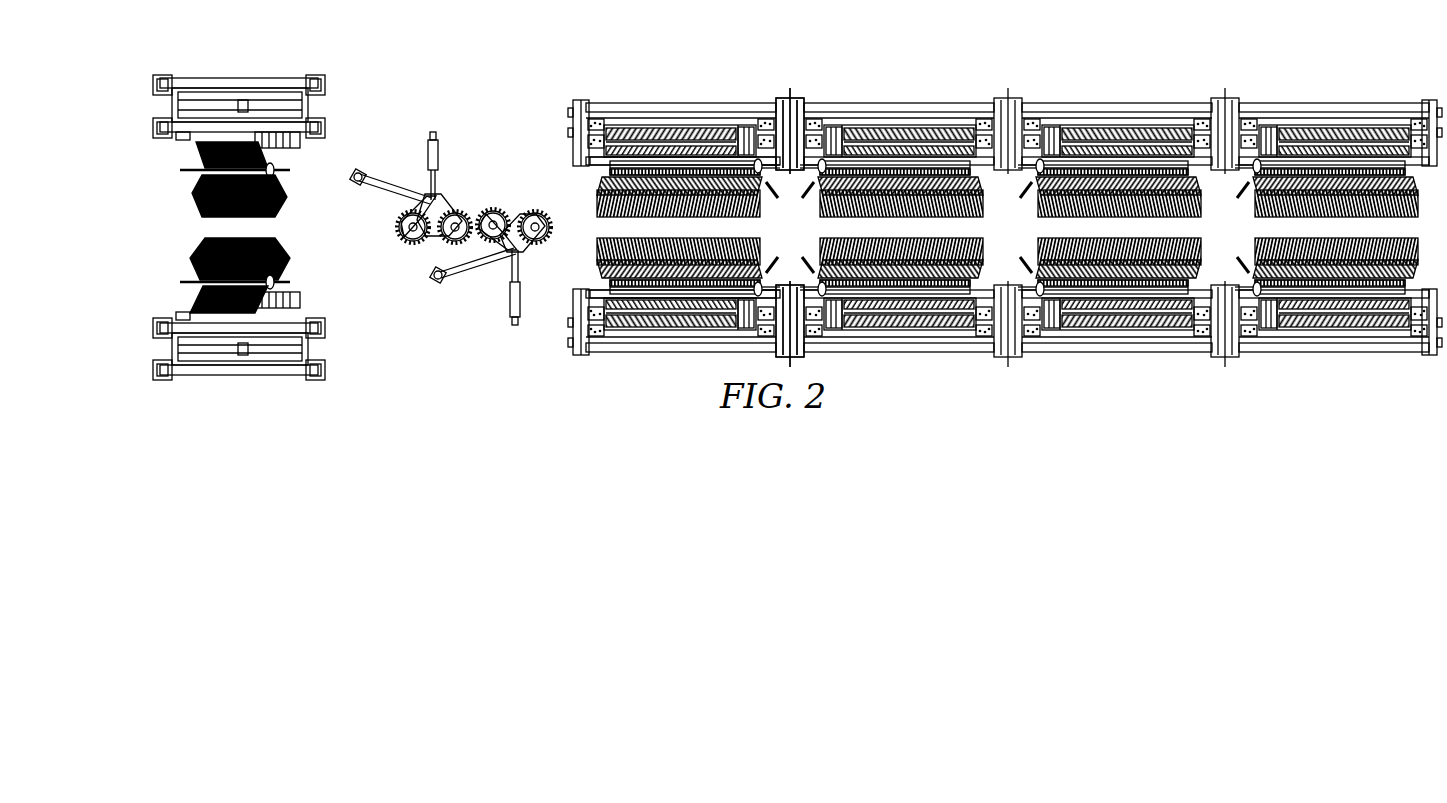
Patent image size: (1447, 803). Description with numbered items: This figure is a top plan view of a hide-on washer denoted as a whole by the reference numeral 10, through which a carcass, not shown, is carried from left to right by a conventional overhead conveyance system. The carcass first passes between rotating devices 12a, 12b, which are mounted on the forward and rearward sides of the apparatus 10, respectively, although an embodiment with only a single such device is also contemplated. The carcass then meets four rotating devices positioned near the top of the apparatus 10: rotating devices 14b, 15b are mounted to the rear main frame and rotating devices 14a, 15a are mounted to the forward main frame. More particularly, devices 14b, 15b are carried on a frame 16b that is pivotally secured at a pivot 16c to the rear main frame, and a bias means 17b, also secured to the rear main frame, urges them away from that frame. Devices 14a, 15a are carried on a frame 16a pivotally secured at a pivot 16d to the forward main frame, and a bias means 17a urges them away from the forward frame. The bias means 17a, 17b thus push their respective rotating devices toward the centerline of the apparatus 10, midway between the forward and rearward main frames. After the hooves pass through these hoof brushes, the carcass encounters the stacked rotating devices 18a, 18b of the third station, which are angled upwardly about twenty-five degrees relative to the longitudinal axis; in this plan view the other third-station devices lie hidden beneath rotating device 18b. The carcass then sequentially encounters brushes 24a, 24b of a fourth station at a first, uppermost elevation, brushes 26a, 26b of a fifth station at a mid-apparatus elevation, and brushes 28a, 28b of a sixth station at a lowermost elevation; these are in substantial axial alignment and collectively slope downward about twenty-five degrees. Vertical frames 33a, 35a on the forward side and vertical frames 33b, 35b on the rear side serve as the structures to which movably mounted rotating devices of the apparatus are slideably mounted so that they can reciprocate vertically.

The hide-on washer 10 is at (1266, 64).
The rotating device 12a is at (176, 266).
The rotating device 12b is at (177, 191).
The rotating device 14a is at (501, 206).
The rotating device 14b is at (398, 231).
The rotating device 15a is at (548, 218).
The rotating device 15b is at (440, 242).
The frame 16a is at (470, 262).
The frame 16b is at (395, 198).
The pivot 16c is at (350, 180).
The pivot 16d is at (433, 273).
The bias means 17a is at (509, 299).
The bias means 17b is at (442, 152).
The rotating device 18a is at (640, 234).
The rotating device 18b is at (726, 221).
The brush 24a is at (906, 240).
The brush 24b is at (858, 222).
The brush 26a is at (1113, 240).
The brush 26b is at (1076, 222).
The brush 28a is at (1330, 240).
The brush 28b is at (1294, 222).
The vertical frame 33a is at (580, 355).
The vertical frame 33b is at (578, 100).
The vertical frame 35a is at (575, 302).
The vertical frame 35b is at (574, 160).